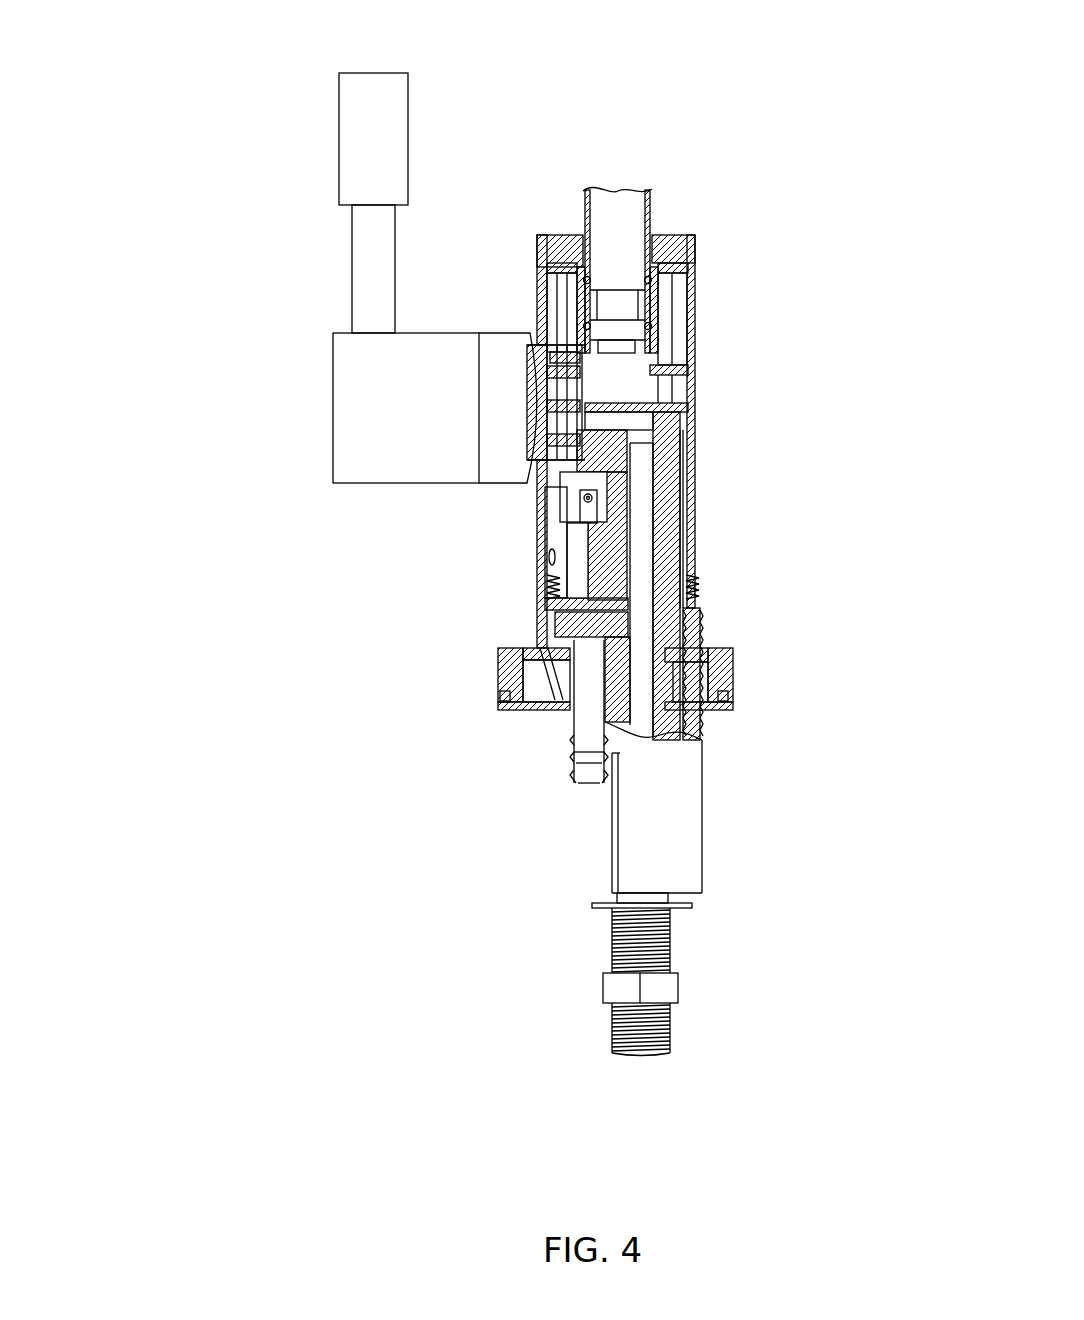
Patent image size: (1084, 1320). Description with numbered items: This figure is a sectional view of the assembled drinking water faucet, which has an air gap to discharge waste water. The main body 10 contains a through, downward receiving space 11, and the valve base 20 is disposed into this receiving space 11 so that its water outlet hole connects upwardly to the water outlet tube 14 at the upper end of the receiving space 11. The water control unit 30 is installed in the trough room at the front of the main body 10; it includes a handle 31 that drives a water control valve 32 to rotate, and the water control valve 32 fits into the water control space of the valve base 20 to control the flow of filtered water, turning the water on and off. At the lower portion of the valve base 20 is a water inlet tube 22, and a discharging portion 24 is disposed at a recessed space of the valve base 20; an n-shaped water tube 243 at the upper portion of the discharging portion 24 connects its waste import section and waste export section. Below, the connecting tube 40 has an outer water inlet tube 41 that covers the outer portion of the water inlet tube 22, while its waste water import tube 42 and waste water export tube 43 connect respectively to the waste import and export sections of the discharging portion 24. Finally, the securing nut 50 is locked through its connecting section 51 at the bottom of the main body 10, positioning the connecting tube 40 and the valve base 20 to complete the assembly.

The main body 10 is at (704, 441).
The receiving space 11 is at (678, 347).
The water outlet tube 14 is at (595, 220).
The valve base 20 is at (616, 571).
The water inlet tube 22 is at (638, 563).
The discharging portion 24 is at (583, 558).
The n-shaped water tube 243 is at (588, 513).
The water control unit 30 is at (343, 249).
The handle 31 is at (363, 305).
The water control valve 32 is at (527, 353).
The connecting tube 40 is at (690, 938).
The outer water inlet tube 41 is at (668, 682).
The waste water import tube 42 is at (590, 748).
The waste water export tube 43 is at (605, 768).
The securing nut 50 is at (507, 678).
The connecting section 51 is at (542, 615).